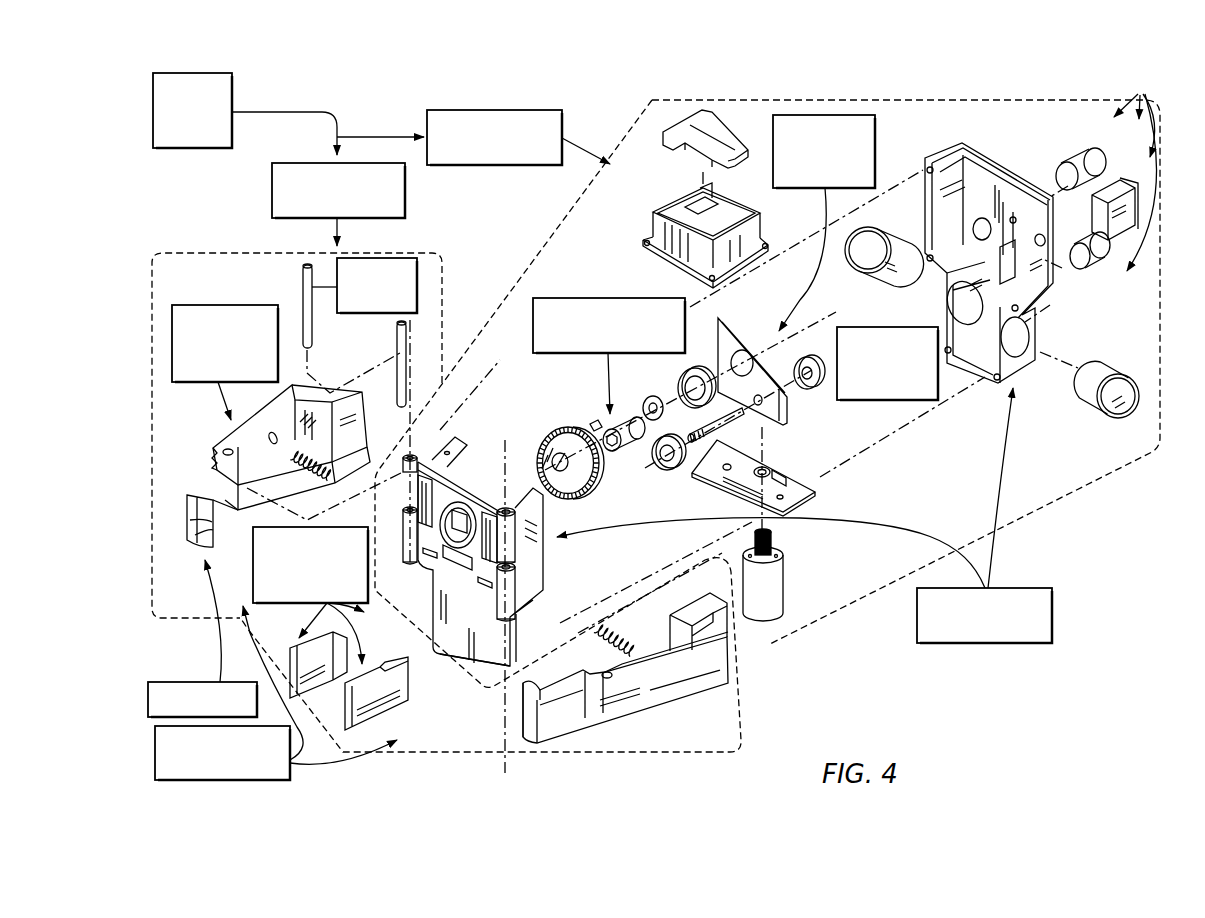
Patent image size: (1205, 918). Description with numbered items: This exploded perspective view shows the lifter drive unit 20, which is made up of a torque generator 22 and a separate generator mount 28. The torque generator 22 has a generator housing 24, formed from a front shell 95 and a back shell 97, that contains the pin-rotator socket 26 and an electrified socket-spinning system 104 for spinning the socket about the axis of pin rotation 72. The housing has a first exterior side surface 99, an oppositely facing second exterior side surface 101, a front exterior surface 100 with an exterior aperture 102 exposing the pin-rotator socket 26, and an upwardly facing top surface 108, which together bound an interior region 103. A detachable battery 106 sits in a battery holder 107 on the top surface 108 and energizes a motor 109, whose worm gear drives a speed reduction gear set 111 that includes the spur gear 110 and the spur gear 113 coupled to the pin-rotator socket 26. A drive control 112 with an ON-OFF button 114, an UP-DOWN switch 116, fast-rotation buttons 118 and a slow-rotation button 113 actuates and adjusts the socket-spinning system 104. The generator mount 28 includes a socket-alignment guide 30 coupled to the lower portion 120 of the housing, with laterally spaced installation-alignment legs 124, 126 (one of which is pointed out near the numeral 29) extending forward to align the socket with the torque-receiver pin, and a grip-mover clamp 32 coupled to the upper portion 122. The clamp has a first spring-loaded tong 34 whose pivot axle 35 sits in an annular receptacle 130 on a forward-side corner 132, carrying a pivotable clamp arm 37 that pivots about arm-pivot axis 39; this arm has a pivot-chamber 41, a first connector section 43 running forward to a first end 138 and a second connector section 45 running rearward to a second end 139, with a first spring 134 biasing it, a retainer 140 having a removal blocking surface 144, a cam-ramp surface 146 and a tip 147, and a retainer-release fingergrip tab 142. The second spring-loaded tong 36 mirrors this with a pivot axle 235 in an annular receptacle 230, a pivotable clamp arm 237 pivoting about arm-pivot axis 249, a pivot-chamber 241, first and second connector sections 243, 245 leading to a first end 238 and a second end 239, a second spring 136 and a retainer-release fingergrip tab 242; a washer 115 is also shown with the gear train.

The lifter drive unit 20 is at (232, 98).
The torque generator 22 is at (487, 110).
The generator housing 24 is at (962, 643).
The pin-rotator socket 26 is at (580, 298).
The generator mount 28 is at (272, 190).
The socket-alignment guide plate 29 is at (329, 707).
The socket-alignment guide 30 is at (287, 603).
The grip-mover clamp 32 is at (290, 773).
The first spring-loaded tong 34 is at (229, 530).
The pivot axle 35 is at (412, 253).
The second spring-loaded tong 36 is at (518, 718).
The pivotable clamp arm 37 is at (212, 305).
The arm-pivot axis 39 is at (411, 326).
The pivot-chamber 41 is at (218, 445).
The first connector section 43 is at (208, 475).
The second connector section 45 is at (266, 412).
The axis of pin rotation 72 is at (868, 327).
The front shell 95 is at (545, 553).
The back shell 97 is at (1007, 170).
The first exterior side surface 99 is at (453, 467).
The front exterior surface 100 is at (490, 426).
The second exterior side surface 101 is at (545, 548).
The exterior aperture 102 is at (463, 506).
The interior region 103 is at (516, 456).
The socket-spinning system 104 is at (828, 115).
The detachable battery 106 is at (690, 123).
The battery holder 107 is at (657, 215).
The upwardly facing top surface 108 is at (958, 150).
The motor 109 is at (778, 587).
The spur gear 110 is at (690, 442).
The speed reduction gear set 111 is at (637, 462).
The drive control 112 is at (1108, 156).
The slow-rotation button 113 is at (570, 430).
The ON-OFF button 114 is at (1080, 152).
The washer 115 is at (808, 389).
The UP-DOWN switch 116 is at (1118, 172).
The fast-rotation buttons 118 is at (917, 276).
The lower portion 120 is at (480, 653).
The upper portion 122 is at (520, 512).
The installation-alignment leg 124 is at (397, 651).
The installation-alignment leg 126 is at (415, 668).
The annular receptacle 130 is at (400, 512).
The forward-side corner 132 is at (422, 567).
The first spring 134 is at (332, 477).
The second spring 136 is at (627, 642).
The first end 138 is at (183, 487).
The second end 139 is at (364, 382).
The retainer 140 is at (180, 682).
The retainer-release fingergrip tab 142 is at (364, 442).
The removal blocking surface 144 is at (210, 508).
The cam-ramp surface 146 is at (205, 525).
The tip 147 is at (216, 538).
The annular receptacle 230 is at (550, 563).
The pivot axle 235 is at (394, 334).
The pivotable clamp arm 237 is at (613, 767).
The first end 238 is at (539, 746).
The second end 239 is at (745, 625).
The pivot-chamber 241 is at (617, 677).
The retainer-release fingergrip tab 242 is at (693, 607).
The first connector section 243 is at (562, 722).
The second connector section 245 is at (683, 688).
The arm-pivot axis 249 is at (505, 760).